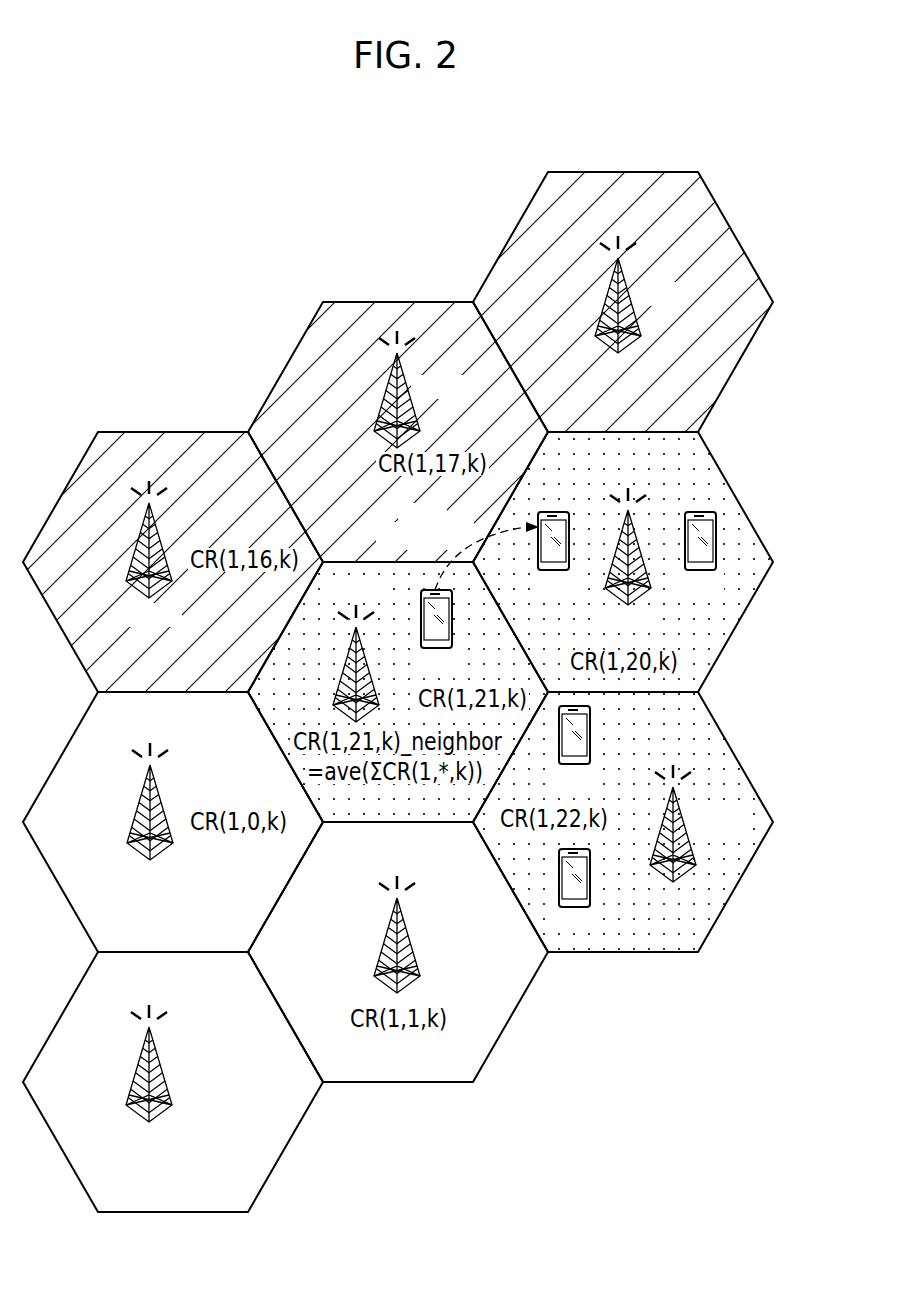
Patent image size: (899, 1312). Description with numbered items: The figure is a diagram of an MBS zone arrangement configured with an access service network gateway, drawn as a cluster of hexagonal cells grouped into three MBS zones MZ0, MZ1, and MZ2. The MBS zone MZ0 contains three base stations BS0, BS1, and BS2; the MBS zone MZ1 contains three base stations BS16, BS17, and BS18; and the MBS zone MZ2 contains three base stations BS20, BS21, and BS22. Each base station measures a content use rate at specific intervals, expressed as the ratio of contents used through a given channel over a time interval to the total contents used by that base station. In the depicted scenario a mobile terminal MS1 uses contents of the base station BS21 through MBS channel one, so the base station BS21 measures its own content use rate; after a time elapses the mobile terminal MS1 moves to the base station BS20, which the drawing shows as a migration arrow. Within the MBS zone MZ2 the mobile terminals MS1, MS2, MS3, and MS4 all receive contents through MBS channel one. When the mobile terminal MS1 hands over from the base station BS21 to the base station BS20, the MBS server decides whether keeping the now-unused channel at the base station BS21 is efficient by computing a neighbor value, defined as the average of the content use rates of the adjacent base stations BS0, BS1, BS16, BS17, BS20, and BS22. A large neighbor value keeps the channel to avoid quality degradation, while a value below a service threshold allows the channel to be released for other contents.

The MBS zone MZ0 is at (285, 952).
The MBS zone MZ1 is at (449, 638).
The MBS zone MZ2 is at (510, 692).
The base station BS0 is at (150, 817).
The base station BS1 is at (413, 934).
The base station BS2 is at (149, 1078).
The base station BS16 is at (153, 555).
The base station BS17 is at (419, 389).
The base station BS18 is at (641, 294).
The base station BS20 is at (630, 559).
The base station BS21 is at (358, 649).
The base station BS22 is at (695, 823).
The mobile terminal MS1 is at (477, 587).
The mobile terminal MS2 is at (574, 747).
The mobile terminal MS3 is at (574, 891).
The mobile terminal MS4 is at (701, 554).